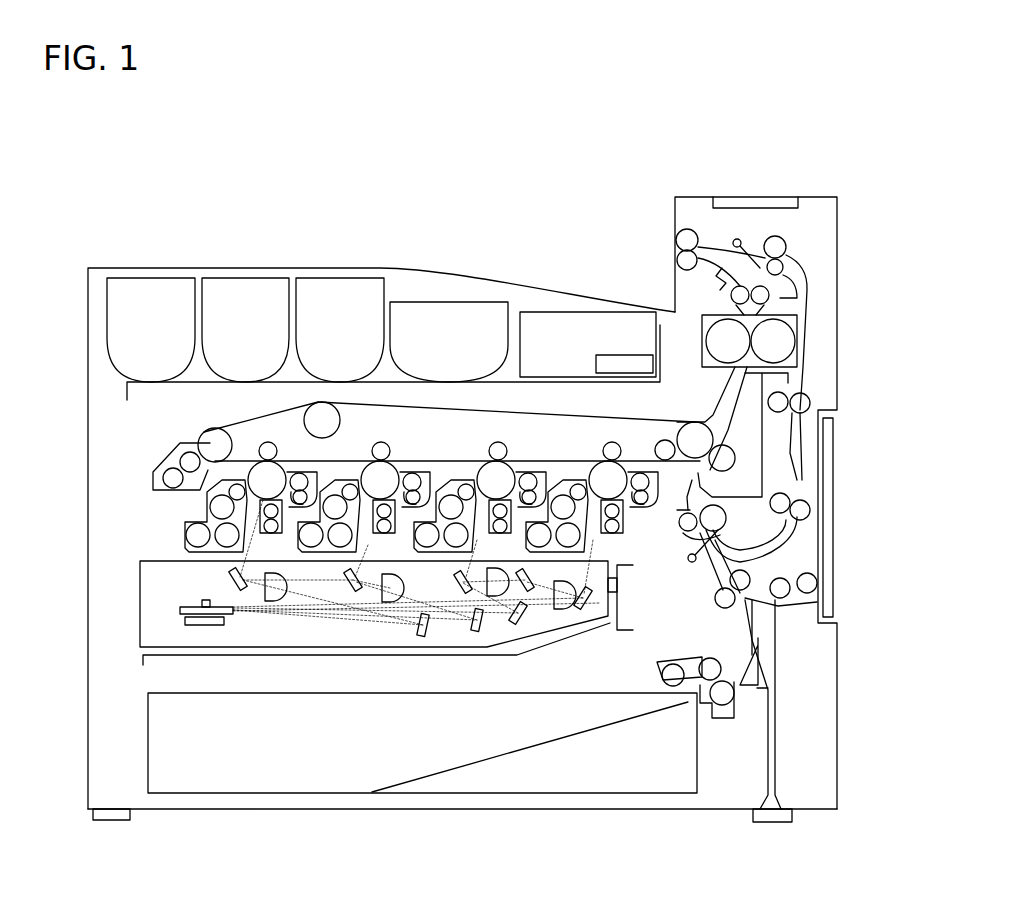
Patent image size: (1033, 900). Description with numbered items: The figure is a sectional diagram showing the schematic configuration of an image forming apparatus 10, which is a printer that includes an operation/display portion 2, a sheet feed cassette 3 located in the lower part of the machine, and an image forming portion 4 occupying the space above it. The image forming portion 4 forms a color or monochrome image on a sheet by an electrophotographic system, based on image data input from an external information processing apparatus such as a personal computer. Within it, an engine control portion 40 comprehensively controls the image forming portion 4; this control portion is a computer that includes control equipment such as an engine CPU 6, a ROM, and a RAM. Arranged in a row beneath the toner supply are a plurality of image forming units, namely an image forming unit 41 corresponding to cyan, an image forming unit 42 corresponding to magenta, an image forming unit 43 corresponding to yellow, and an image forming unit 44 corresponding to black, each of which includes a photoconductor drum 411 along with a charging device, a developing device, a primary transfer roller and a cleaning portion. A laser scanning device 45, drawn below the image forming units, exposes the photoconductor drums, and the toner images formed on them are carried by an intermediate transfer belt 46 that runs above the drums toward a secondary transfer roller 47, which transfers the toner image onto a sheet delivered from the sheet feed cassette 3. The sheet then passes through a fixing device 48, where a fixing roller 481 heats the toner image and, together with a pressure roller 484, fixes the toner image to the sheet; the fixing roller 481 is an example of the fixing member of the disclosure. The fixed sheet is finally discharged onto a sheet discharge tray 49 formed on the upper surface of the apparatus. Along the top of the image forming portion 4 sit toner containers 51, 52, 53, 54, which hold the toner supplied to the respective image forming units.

The image forming apparatus 10 is at (111, 251).
The operation/display portion 2 is at (789, 197).
The sheet feed cassette 3 is at (148, 745).
The image forming portion 4 is at (148, 454).
The engine CPU 6 is at (612, 373).
The engine control portion 40 is at (547, 312).
The image forming unit 41 is at (280, 461).
The image forming unit 42 is at (393, 461).
The image forming unit 43 is at (508, 461).
The image forming unit 44 is at (622, 461).
The photoconductor drum 411 is at (263, 454).
The laser scanning device 45 is at (140, 588).
The intermediate transfer belt 46 is at (245, 425).
The secondary transfer roller 47 is at (732, 472).
The fixing device 48 is at (800, 323).
The fixing roller 481 is at (790, 351).
The pressure roller 484 is at (712, 367).
The sheet discharge tray 49 is at (616, 299).
The toner container 51 is at (191, 278).
The toner container 52 is at (281, 278).
The toner container 53 is at (377, 278).
The toner container 54 is at (500, 302).